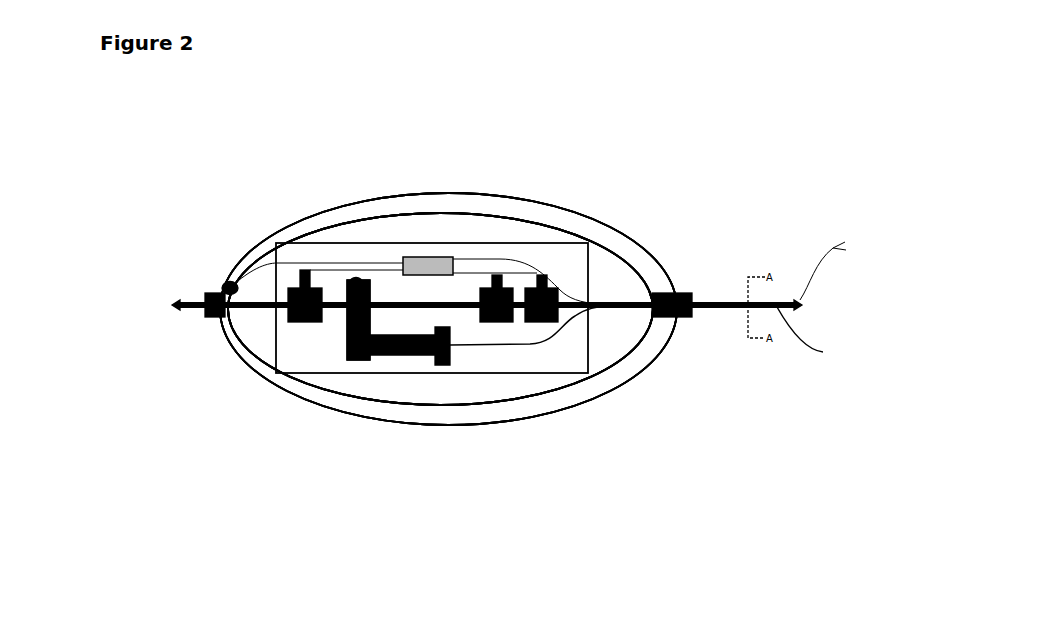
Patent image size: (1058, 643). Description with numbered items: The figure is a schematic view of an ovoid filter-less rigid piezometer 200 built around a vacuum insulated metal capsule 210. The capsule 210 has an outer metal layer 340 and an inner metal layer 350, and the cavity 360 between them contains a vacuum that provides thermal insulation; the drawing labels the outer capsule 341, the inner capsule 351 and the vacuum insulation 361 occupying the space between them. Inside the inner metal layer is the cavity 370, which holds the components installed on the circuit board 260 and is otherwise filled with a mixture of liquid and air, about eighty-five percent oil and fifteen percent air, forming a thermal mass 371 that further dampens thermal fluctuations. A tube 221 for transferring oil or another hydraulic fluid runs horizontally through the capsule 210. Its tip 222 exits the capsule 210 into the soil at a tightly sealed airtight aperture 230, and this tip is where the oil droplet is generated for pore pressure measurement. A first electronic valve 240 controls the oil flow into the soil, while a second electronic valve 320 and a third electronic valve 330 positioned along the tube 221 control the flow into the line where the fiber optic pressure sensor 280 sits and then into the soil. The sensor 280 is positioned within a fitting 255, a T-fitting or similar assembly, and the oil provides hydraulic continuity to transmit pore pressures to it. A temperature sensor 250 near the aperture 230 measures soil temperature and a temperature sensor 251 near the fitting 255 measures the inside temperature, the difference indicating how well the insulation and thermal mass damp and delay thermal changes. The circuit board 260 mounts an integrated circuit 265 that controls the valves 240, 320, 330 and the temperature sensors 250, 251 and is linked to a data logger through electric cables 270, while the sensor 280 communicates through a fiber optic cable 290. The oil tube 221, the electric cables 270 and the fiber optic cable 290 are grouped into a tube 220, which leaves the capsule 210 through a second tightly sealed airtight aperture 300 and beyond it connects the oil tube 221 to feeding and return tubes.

The filter less rigid piezometer 200 is at (90, 200).
The vacuum insulated metal capsule 210 is at (657, 243).
The tube 220 is at (708, 298).
The oil tube 221 is at (262, 308).
The tip of tube 222 is at (172, 304).
The tightly sealed air tight aperture 230 is at (207, 318).
The first electronic valve 240 is at (300, 322).
The temperature sensor 250 is at (222, 285).
The temperature sensor 251 is at (350, 278).
The fitting 255 is at (410, 362).
The circuit board 260 is at (377, 241).
The integrated circuit 265 is at (433, 266).
The electric cable 270 is at (830, 249).
The fiber optic pressure sensor 280 is at (368, 362).
The fiber optic cable 290 is at (540, 346).
The tightly sealed air tight aperture 300 is at (688, 319).
The second electronic valve 320 is at (507, 283).
The third electronic valve 330 is at (552, 285).
The outer metal layer 340 is at (408, 192).
The outer capsule 341 is at (599, 403).
The inner metal layer 350 is at (467, 407).
The inner capsule 351 is at (548, 394).
The cavity 360 is at (493, 417).
The vacuum insulation 361 is at (520, 409).
The cavity 370 is at (333, 384).
The thermal mass 371 is at (442, 386).